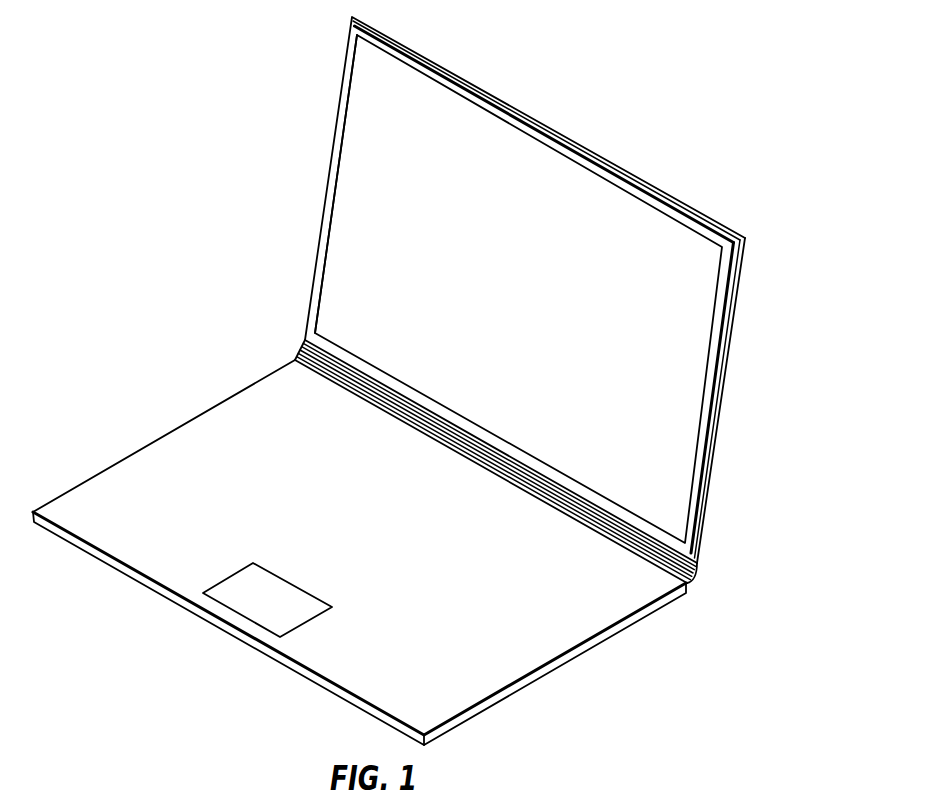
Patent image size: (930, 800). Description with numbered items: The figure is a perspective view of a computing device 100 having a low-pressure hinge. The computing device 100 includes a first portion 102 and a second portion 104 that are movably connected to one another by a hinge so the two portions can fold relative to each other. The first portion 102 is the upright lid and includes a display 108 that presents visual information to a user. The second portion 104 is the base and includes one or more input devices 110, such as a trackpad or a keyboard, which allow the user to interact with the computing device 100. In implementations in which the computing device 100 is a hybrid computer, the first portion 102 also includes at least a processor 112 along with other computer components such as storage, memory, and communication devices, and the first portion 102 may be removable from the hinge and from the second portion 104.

The computing device 100 is at (425, 381).
The first portion 102 is at (742, 283).
The second portion 104 is at (694, 578).
The display 108 is at (697, 367).
The input device 110 is at (250, 608).
The processor 112 is at (724, 446).